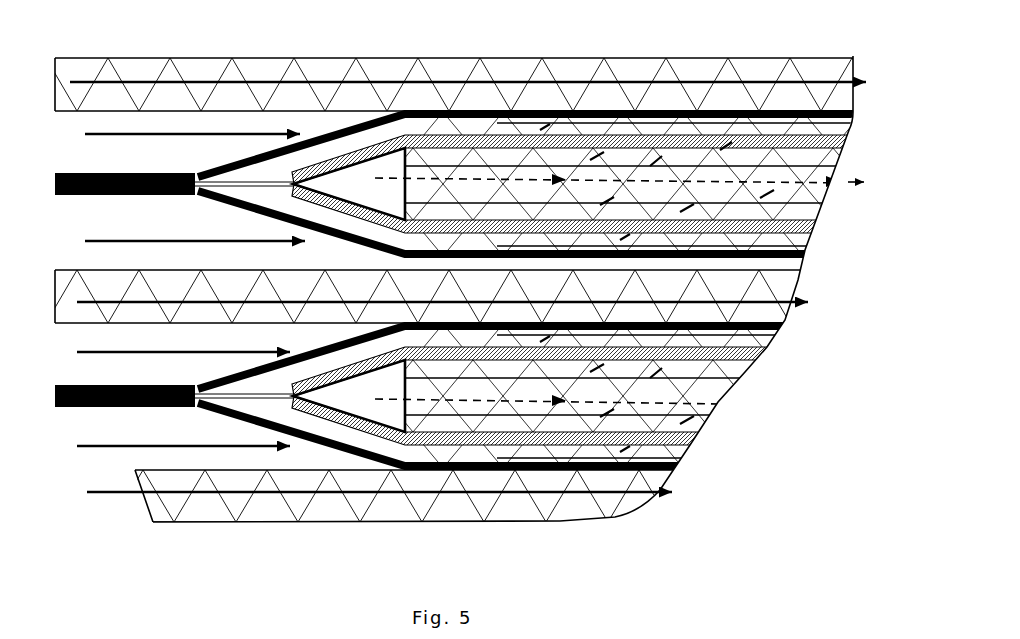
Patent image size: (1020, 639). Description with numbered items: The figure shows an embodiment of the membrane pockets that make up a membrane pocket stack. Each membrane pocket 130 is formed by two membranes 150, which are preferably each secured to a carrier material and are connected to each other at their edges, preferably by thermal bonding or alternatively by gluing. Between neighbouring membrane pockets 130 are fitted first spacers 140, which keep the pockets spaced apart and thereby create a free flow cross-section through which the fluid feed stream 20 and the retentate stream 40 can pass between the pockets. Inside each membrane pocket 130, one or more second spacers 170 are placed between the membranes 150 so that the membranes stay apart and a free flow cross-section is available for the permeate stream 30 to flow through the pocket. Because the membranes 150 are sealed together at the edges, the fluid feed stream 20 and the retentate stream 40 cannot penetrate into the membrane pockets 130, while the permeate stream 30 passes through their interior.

The fluid feed stream 20 is at (661, 492).
The retentate stream 40 is at (420, 556).
The permeate stream 30 is at (720, 406).
The membrane pocket 130 is at (462, 457).
The first spacer 140 is at (617, 312).
The membrane 150 is at (243, 376).
The second spacer 170 is at (577, 182).